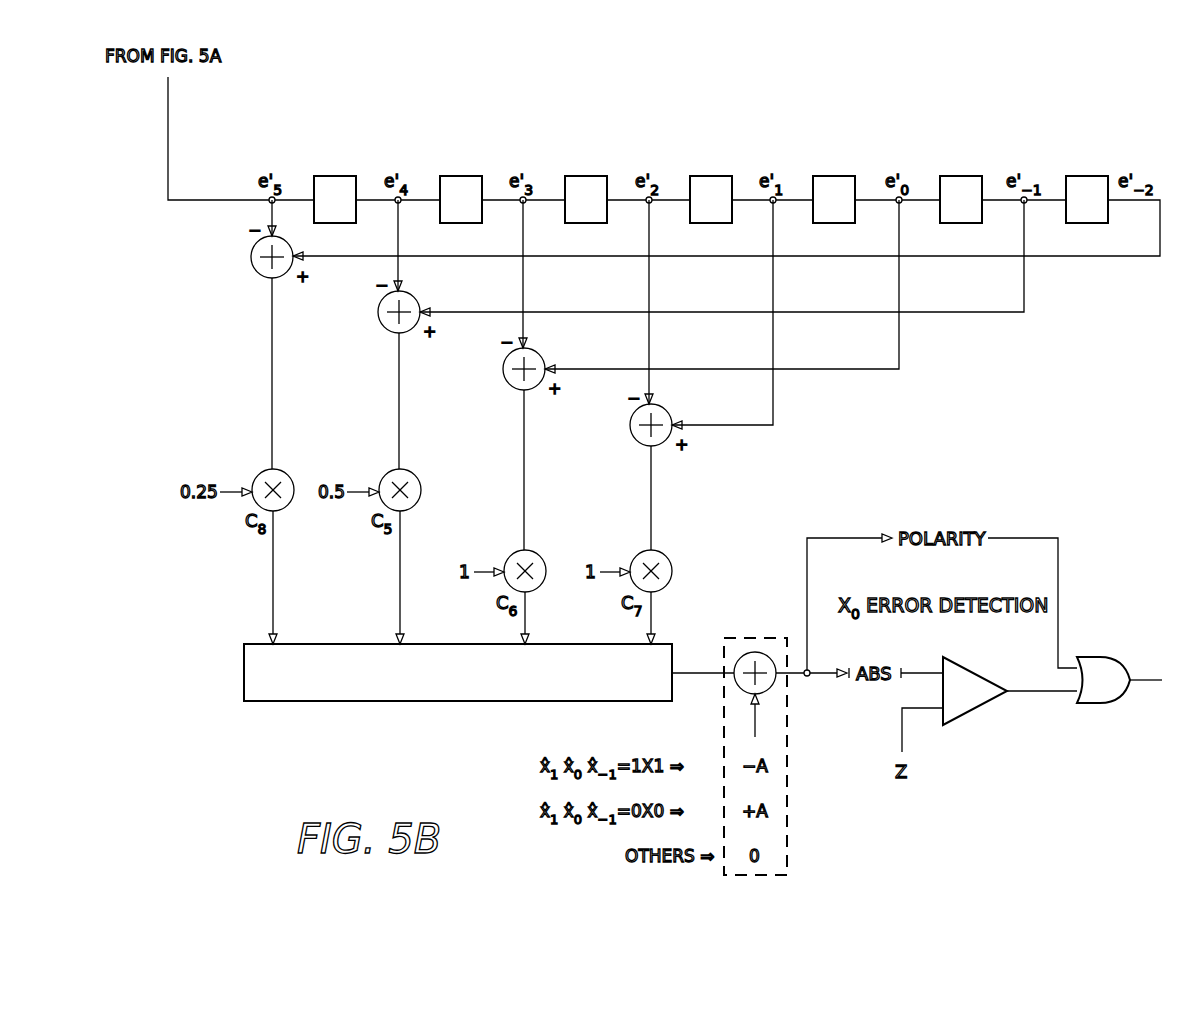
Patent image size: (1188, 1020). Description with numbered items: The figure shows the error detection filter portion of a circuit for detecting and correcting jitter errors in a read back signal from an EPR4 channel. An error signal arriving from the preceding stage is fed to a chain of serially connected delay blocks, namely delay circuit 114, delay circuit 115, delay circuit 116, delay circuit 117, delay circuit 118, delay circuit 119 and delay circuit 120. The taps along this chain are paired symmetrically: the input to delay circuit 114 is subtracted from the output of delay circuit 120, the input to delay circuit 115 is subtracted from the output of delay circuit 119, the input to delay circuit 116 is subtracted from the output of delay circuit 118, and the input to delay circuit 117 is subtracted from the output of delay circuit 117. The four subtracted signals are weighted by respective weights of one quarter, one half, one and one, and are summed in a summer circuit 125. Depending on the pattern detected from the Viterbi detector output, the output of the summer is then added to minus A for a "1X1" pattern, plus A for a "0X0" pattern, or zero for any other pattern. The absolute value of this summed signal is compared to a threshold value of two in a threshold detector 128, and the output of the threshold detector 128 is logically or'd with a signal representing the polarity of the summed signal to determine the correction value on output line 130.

The delay circuit 114 is at (334, 176).
The delay circuit 115 is at (460, 176).
The delay circuit 116 is at (585, 176).
The delay circuit 117 is at (710, 176).
The delay circuit 118 is at (833, 176).
The delay circuit 119 is at (960, 176).
The delay circuit 120 is at (1086, 176).
The summer circuit 125 is at (244, 673).
The threshold detector 128 is at (975, 712).
The output line 130 is at (1150, 684).